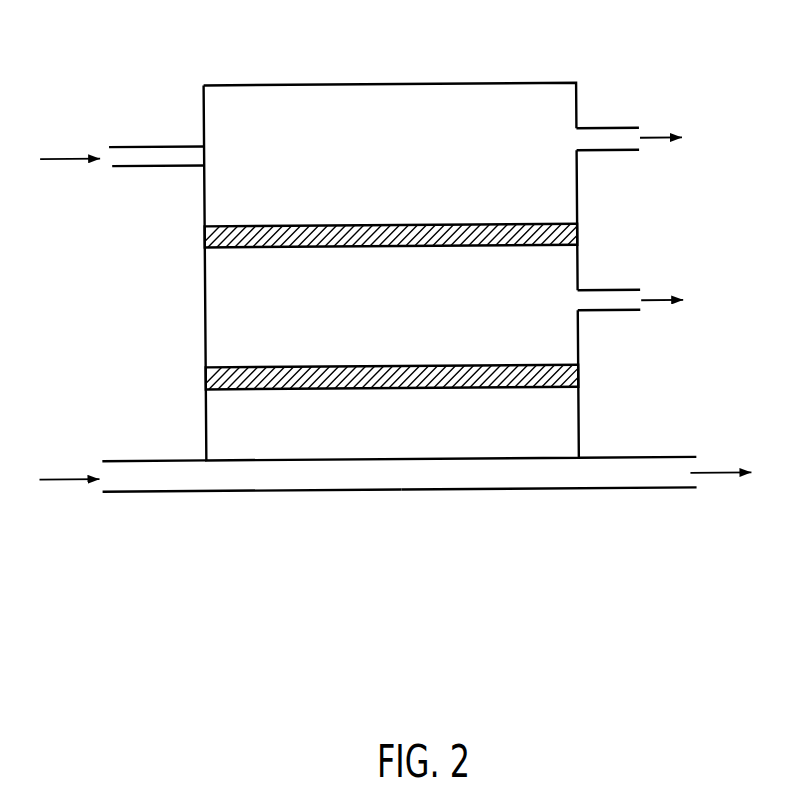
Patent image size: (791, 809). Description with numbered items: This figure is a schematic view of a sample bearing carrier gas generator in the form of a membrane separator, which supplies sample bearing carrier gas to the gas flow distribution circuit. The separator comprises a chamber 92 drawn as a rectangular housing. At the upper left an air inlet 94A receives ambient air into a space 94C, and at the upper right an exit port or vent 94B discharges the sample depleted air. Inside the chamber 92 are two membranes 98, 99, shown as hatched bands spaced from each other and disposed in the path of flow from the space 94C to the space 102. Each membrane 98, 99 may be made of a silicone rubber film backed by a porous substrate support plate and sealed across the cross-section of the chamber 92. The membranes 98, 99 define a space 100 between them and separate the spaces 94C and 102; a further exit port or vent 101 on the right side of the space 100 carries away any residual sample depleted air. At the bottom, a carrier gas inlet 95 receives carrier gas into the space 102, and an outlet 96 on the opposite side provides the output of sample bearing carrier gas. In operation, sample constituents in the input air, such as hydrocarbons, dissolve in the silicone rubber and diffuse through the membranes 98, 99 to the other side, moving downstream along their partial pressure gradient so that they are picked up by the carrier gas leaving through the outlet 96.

The chamber 92 is at (562, 84).
The air inlet 94A is at (150, 145).
The exit port or vent 94B is at (607, 129).
The space 94C is at (391, 155).
The membrane 98 is at (450, 225).
The space 100 is at (391, 306).
The membrane 99 is at (437, 366).
The exit port or vent 101 is at (600, 292).
The space 102 is at (392, 424).
The carrier gas inlet 95 is at (148, 459).
The outlet 96 is at (655, 459).